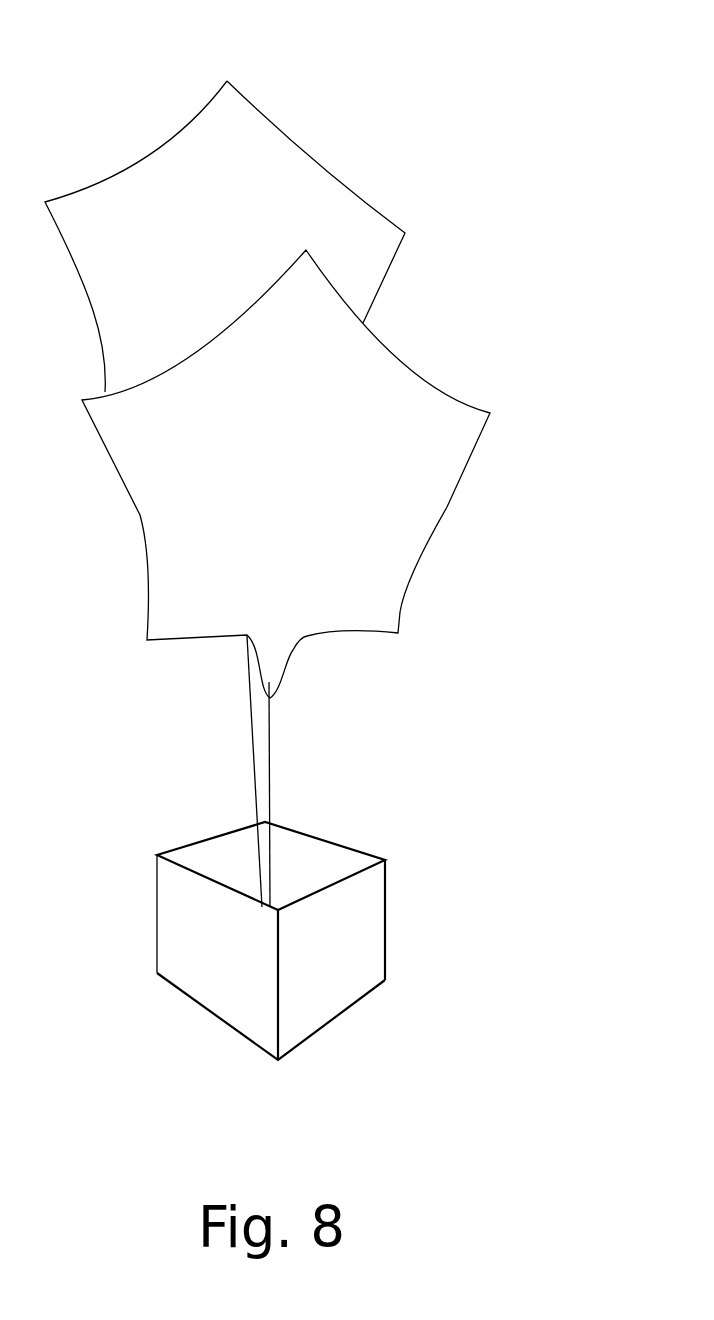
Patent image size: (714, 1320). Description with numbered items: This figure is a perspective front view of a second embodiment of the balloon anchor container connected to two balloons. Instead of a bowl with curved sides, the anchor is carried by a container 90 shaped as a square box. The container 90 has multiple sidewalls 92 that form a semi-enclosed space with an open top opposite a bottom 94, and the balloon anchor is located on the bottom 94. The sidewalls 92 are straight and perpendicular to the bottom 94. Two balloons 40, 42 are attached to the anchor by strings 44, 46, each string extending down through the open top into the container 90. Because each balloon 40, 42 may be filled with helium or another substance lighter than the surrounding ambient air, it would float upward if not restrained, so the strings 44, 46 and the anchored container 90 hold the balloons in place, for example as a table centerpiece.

The balloon 40 is at (428, 513).
The balloon 42 is at (382, 245).
The string 44 is at (272, 764).
The string 46 is at (252, 743).
The container 90 is at (332, 953).
The sidewall 92 is at (212, 863).
The bottom 94 is at (328, 1023).